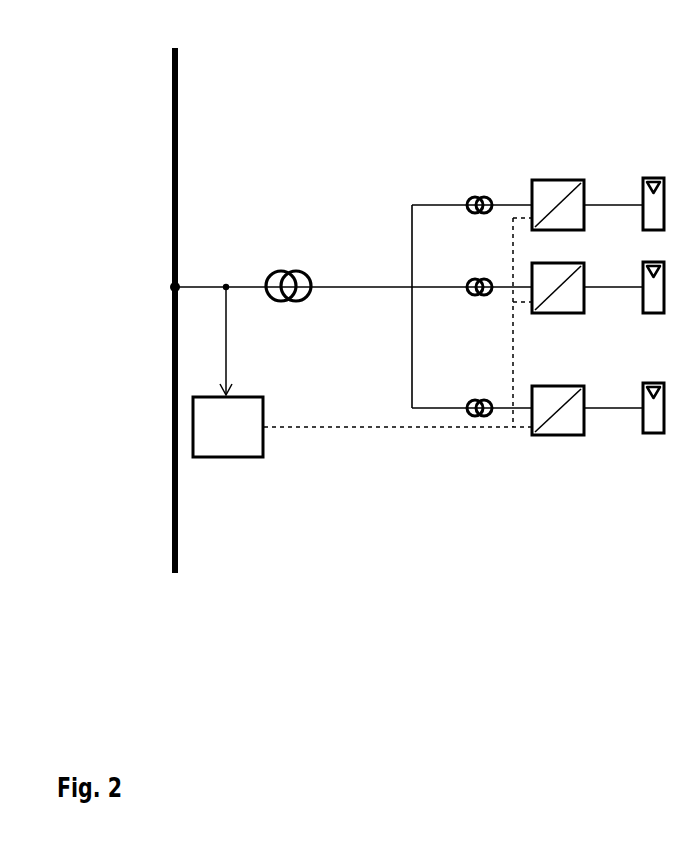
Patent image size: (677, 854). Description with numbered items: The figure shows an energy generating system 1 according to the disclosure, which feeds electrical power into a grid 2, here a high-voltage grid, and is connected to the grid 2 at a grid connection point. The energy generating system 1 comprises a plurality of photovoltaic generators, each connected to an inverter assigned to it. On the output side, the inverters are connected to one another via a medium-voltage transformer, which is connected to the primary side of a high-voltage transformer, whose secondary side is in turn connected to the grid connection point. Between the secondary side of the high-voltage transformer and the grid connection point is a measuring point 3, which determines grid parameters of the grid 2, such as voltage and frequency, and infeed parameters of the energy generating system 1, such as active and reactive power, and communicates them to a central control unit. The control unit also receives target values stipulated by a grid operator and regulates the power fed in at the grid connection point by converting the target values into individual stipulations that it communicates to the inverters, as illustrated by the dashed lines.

The energy generating system 1 is at (316, 150).
The grid 2 is at (172, 130).
The measuring point 3 is at (224, 282).